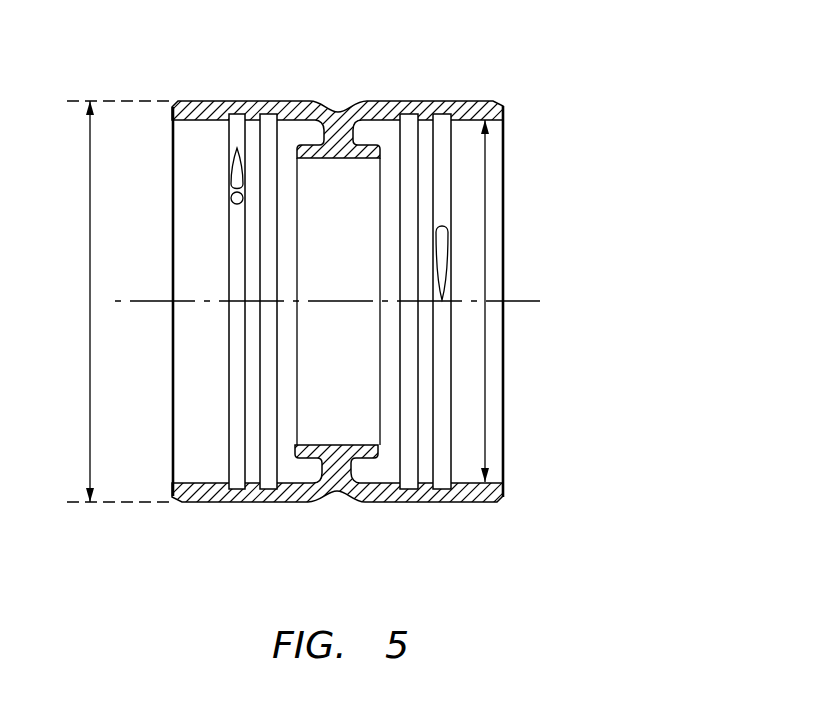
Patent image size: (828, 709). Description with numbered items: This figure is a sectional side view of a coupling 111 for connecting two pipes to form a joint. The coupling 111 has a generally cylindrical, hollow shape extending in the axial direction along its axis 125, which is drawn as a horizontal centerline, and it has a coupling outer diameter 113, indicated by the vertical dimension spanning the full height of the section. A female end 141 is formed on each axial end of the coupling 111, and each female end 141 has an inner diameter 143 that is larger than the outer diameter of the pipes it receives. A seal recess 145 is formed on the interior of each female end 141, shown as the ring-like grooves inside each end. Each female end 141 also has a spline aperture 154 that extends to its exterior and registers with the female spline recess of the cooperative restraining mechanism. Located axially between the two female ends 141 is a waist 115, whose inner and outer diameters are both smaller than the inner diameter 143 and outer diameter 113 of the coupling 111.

The coupling 111 is at (653, 80).
The coupling outer diameter 113 is at (108, 301).
The waist 115 is at (339, 108).
The axis 125 is at (542, 300).
The female end 141 is at (528, 153).
The inner diameter 143 is at (485, 383).
The seal recess 145 is at (255, 110).
The spline aperture 154 is at (231, 197).